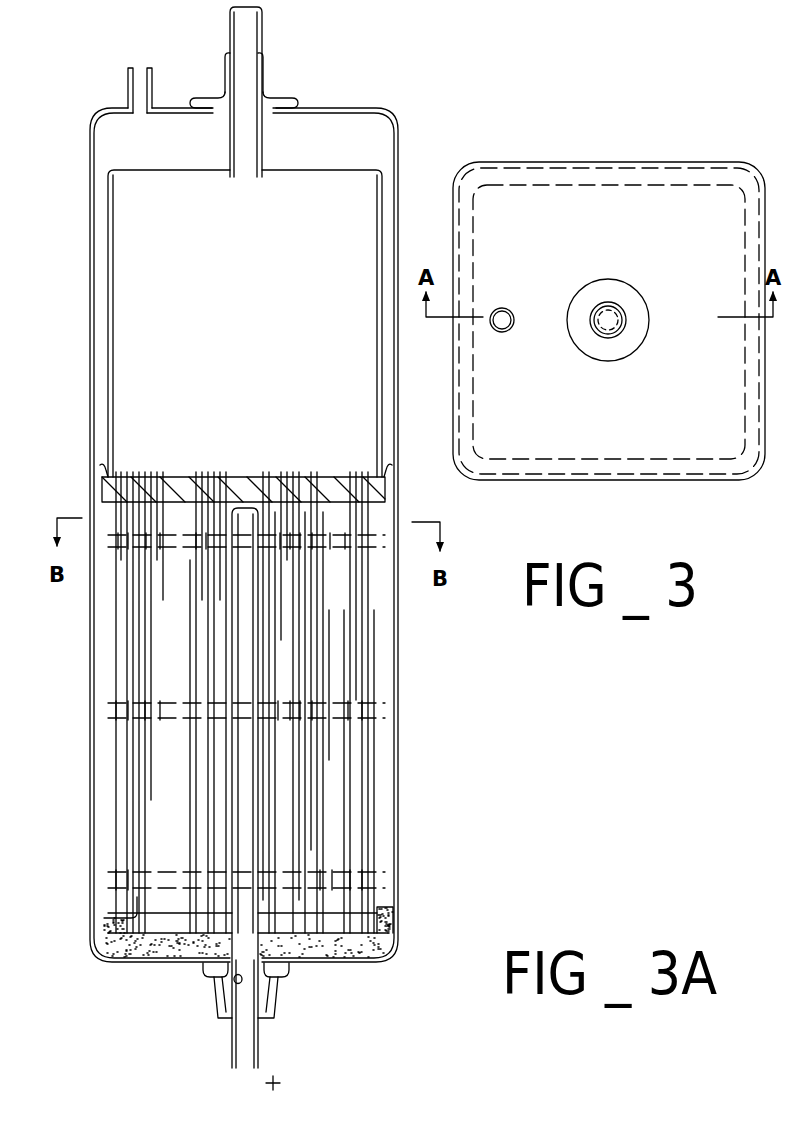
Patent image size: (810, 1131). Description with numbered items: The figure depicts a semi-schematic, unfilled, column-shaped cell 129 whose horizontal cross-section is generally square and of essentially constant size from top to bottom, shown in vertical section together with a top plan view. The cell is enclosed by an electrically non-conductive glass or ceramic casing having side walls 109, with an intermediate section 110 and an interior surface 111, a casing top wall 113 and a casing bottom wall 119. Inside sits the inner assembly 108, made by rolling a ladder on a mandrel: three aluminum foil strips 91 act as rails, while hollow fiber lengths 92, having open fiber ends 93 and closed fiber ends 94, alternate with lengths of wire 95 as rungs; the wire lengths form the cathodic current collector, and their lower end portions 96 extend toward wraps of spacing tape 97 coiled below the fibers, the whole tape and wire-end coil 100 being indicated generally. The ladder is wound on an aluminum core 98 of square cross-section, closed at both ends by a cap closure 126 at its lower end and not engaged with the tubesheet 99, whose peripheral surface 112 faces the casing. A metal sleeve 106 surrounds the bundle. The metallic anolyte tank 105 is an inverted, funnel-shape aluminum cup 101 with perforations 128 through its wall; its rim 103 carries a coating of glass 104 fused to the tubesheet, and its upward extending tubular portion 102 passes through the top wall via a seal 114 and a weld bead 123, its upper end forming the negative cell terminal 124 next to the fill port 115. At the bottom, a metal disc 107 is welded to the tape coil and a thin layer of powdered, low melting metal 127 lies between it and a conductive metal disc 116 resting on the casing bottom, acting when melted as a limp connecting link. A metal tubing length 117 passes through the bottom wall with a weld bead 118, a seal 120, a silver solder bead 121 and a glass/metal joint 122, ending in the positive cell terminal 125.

In FIG. 3, the aluminum foil strips 91 is at (110, 715).
In FIG. 3, the hollow fiber lengths 92 is at (157, 510).
In FIG. 3, the open fiber ends 93 is at (143, 477).
In FIG. 3, the closed fiber ends 94 is at (137, 907).
In FIG. 3, the lengths of wire 95 is at (130, 778).
In FIG. 3, the lower end portions of wire lengths 96 is at (120, 933).
In FIG. 3, the wraps of spacing tape 97 is at (388, 940).
In FIG. 3, the aluminum core of square cross-section 98 is at (233, 818).
In FIG. 3A, the aluminum core of square cross-section 98 is at (608, 300).
In FIG. 3, the tubesheet 99 is at (262, 477).
In FIG. 3, the tape and wire-end coil 100 is at (388, 962).
In FIG. 3, the inverted funnel-shape aluminum cup 101 is at (108, 300).
In FIG. 3A, the inverted funnel-shape aluminum cup 101 is at (630, 185).
In FIG. 3, the upward extending tubular portion of cup 102 is at (262, 145).
In FIG. 3, the rim of inverted cup 103 is at (388, 493).
In FIG. 3, the coating of glass on rim 104 is at (385, 468).
In FIG. 3, the anolyte tank 105 is at (99, 391).
In FIG. 3, the metal sleeve 106 is at (105, 657).
In FIG. 3, the metal disc welded to bottom of tape coil 107 is at (97, 953).
In FIG. 3, the inner assembly 108 is at (416, 410).
In FIG. 3, the casing side walls 109 is at (394, 257).
In FIG. 3A, the casing side walls 109 is at (752, 170).
In FIG. 3, the intermediate section of casing side wall 110 is at (97, 435).
In FIG. 3, the interior surface of casing side wall 111 is at (100, 467).
In FIG. 3, the peripheral surface of tubesheet 112 is at (100, 502).
In FIG. 3, the casing top wall 113 is at (368, 108).
In FIG. 3A, the casing top wall 113 is at (698, 419).
In FIG. 3, the seal (top) 114 is at (283, 78).
In FIG. 3, the fill port 115 is at (128, 85).
In FIG. 3A, the fill port 115 is at (505, 308).
In FIG. 3, the conductive metal disc 116 is at (360, 950).
In FIG. 3, the metal tubing length 117 is at (236, 981).
In FIG. 3, the weld bead 118 is at (293, 105).
In FIG. 3A, the weld bead 118 is at (640, 295).
In FIG. 3, the casing bottom wall 119 is at (128, 965).
In FIG. 3, the seal (bottom) 120 is at (268, 1008).
In FIG. 3, the silver solder bead 121 is at (223, 1017).
In FIG. 3, the glass/metal joint 122 is at (278, 977).
In FIG. 3, the weld bead 123 is at (267, 57).
In FIG. 3A, the weld bead 123 is at (627, 330).
In FIG. 3, the negative cell terminal 124 is at (230, 30).
In FIG. 3A, the negative cell terminal 124 is at (607, 328).
In FIG. 3, the positive cell terminal 125 is at (227, 1053).
In FIG. 3, the cap closure at lower end of core 126 is at (267, 942).
In FIG. 3, the thin layer of powdered low melting metal 127 is at (92, 953).
In FIG. 3, the perforations through catholyte cup wall 128 is at (380, 905).
In FIG. 3, the complete cell 129 is at (418, 672).